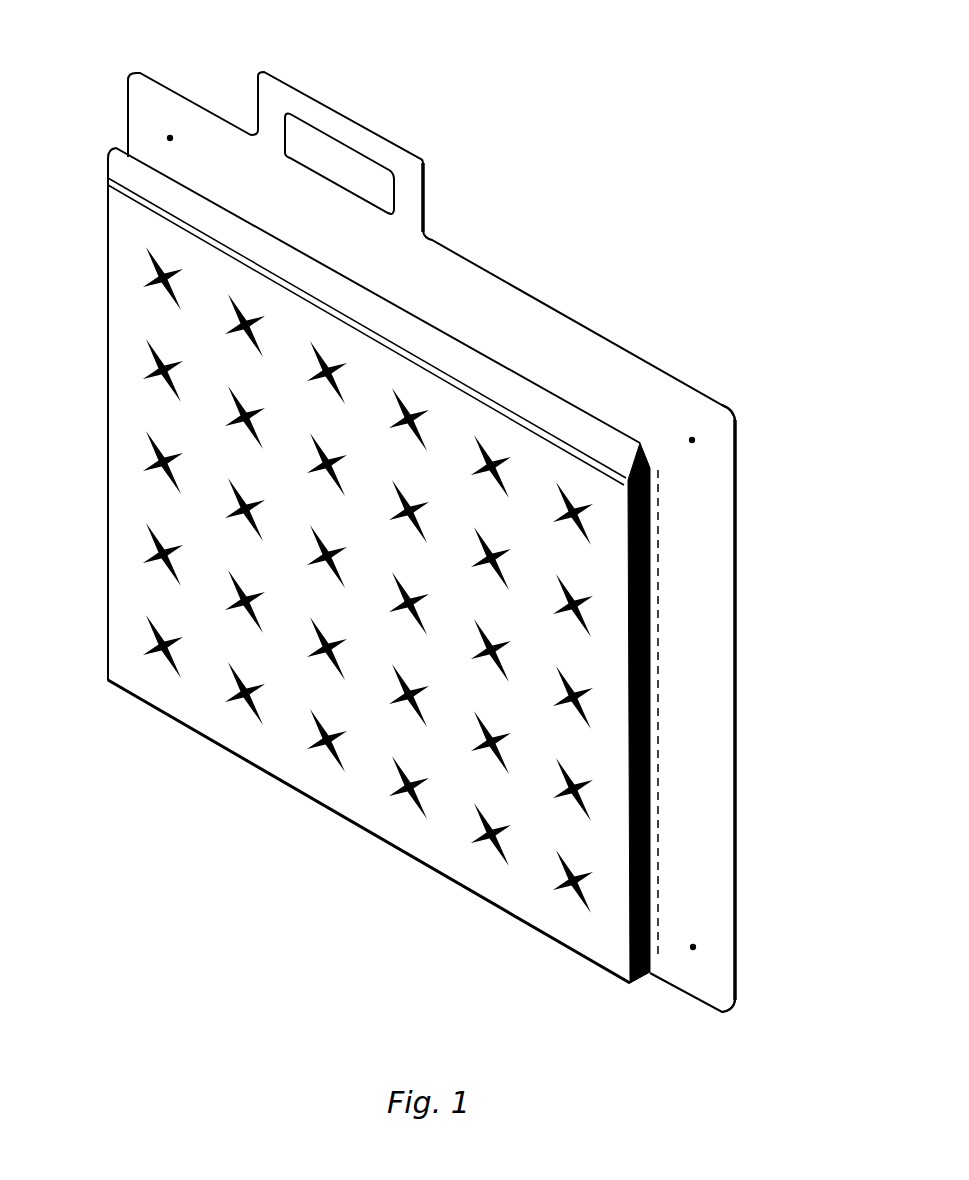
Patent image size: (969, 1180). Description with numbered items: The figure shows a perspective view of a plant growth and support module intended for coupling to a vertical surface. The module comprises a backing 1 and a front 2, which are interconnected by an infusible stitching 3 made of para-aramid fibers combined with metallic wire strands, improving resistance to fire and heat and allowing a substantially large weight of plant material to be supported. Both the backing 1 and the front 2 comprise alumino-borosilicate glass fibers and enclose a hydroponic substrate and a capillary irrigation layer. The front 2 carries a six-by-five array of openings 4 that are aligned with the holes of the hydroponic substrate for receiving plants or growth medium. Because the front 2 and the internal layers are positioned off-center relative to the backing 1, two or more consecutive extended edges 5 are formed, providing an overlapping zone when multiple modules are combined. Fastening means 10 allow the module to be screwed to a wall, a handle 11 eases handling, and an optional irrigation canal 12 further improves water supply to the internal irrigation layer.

The backing 1 is at (532, 347).
The front 2 is at (188, 697).
The infusible stitching 3 is at (658, 650).
The openings 4 is at (160, 280).
The extended edges 5 is at (752, 416).
The fastening means 10 is at (170, 138).
The handle 11 is at (358, 138).
The irrigation canal 12 is at (572, 417).